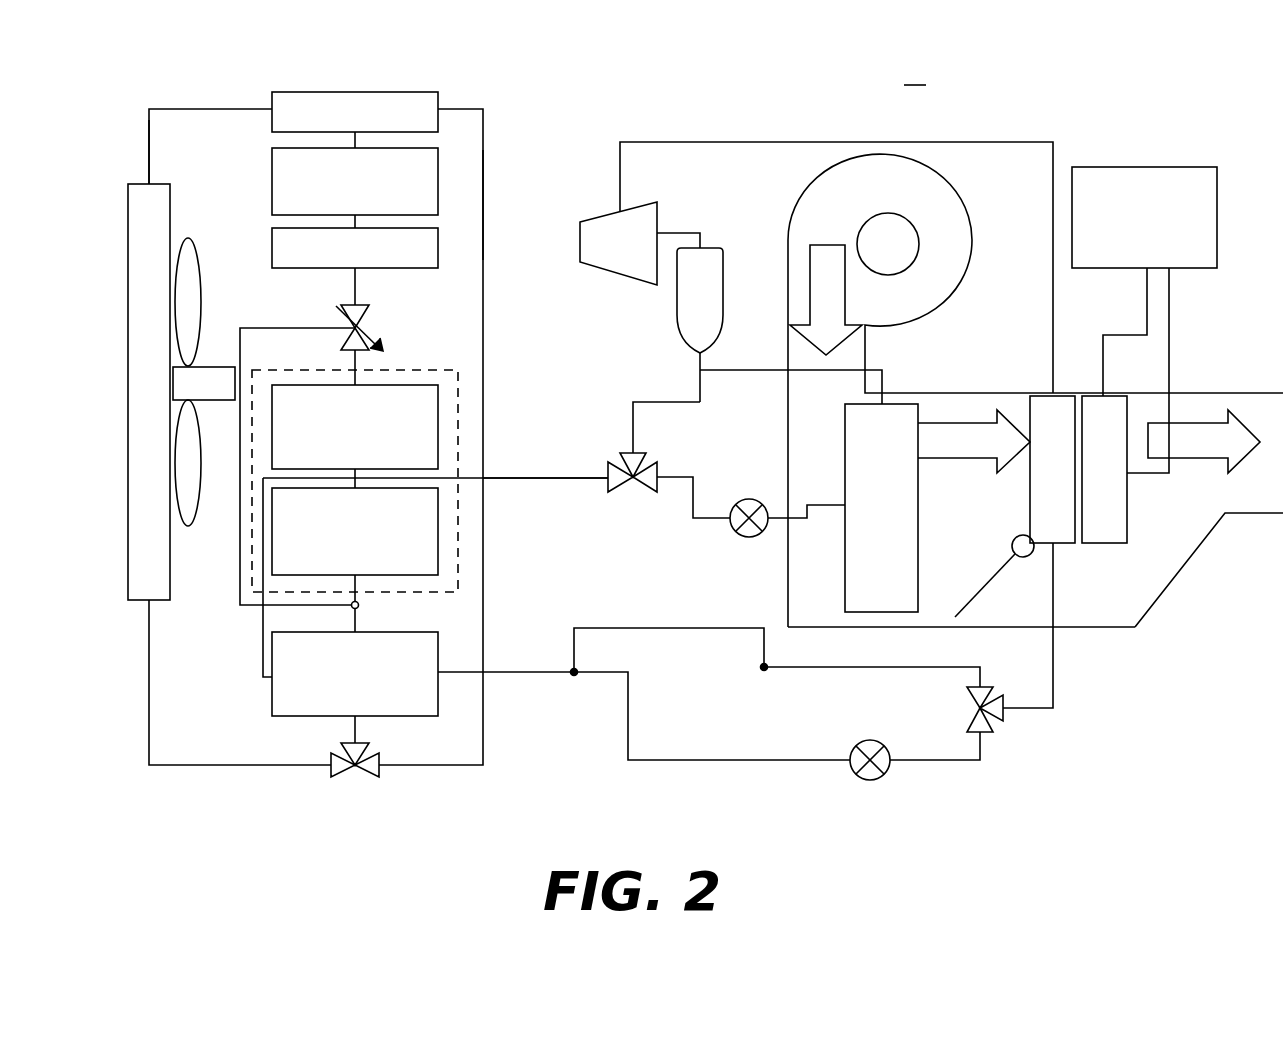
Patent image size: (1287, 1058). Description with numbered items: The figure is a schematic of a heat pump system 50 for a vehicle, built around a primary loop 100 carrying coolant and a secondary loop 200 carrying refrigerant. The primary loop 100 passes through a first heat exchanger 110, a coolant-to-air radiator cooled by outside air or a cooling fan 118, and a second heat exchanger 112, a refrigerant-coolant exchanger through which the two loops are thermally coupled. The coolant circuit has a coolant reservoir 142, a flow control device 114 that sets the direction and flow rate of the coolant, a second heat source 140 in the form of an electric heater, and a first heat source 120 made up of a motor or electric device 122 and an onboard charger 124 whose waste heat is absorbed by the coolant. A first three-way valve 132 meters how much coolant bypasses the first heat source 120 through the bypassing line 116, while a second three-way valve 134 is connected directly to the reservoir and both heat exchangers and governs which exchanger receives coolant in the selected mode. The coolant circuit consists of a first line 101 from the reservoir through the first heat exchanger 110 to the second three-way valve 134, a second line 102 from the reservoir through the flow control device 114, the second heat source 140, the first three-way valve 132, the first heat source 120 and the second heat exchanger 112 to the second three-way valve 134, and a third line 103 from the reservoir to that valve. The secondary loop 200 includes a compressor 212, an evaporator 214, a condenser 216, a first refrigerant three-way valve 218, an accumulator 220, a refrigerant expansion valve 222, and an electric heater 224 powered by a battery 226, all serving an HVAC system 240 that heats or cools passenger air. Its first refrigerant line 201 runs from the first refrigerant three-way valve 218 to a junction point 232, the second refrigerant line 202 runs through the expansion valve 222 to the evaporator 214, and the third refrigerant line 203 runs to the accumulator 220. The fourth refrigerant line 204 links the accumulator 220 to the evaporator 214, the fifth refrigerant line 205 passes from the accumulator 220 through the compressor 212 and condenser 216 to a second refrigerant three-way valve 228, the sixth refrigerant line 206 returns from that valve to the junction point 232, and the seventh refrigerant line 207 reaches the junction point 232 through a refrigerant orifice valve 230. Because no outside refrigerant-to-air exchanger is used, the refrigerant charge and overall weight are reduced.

The heat pump system 50 is at (915, 73).
The primary loop 100 is at (226, 108).
The first line 101 is at (148, 146).
The second line 102 is at (356, 141).
The third line 103 is at (484, 208).
The first heat exchanger 110 is at (127, 246).
The second heat exchanger 112 is at (271, 696).
The flow control device 114 is at (271, 168).
The bypassing line 116 is at (239, 594).
The cooling fan 118 is at (201, 300).
The first heat source 120 is at (459, 570).
The electric device 122 is at (439, 440).
The onboard charger 124 is at (439, 538).
The first three-way valve 132 is at (372, 314).
The second three-way valve 134 is at (364, 778).
The second heat source 140 is at (271, 241).
The coolant reservoir 142 is at (408, 92).
The secondary loop 200 is at (604, 476).
The first refrigerant line 201 is at (262, 658).
The second refrigerant line 202 is at (680, 492).
The third refrigerant line 203 is at (636, 400).
The fourth refrigerant line 204 is at (758, 372).
The fifth refrigerant line 205 is at (1004, 142).
The sixth refrigerant line 206 is at (740, 762).
The seventh refrigerant line 207 is at (690, 627).
The compressor 212 is at (655, 204).
The evaporator 214 is at (918, 552).
The condenser 216 is at (1066, 545).
The first refrigerant three-way valve 218 is at (646, 460).
The accumulator 220 is at (720, 250).
The refrigerant expansion valve 222 is at (752, 498).
The electric heater 224 is at (1128, 490).
The battery 226 is at (1218, 222).
The second refrigerant three-way valve 228 is at (996, 731).
The refrigerant orifice valve 230 is at (889, 768).
The junction point 232 is at (578, 675).
The HVAC system 240 is at (1184, 556).